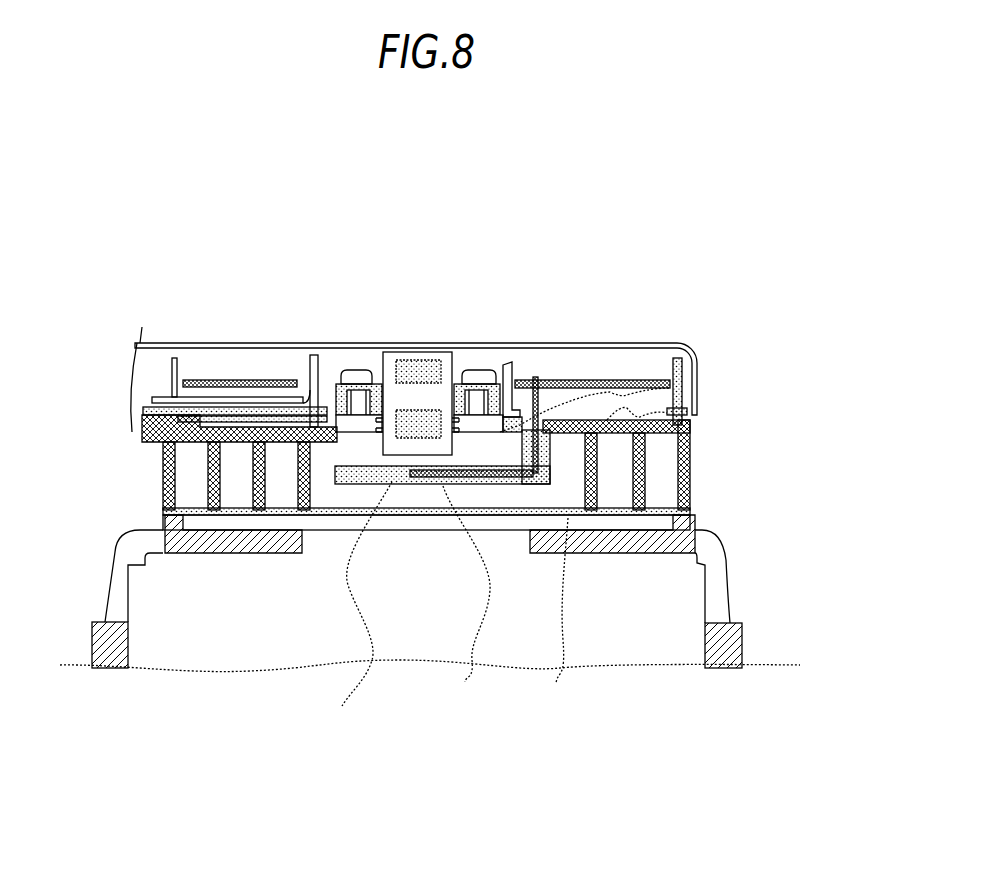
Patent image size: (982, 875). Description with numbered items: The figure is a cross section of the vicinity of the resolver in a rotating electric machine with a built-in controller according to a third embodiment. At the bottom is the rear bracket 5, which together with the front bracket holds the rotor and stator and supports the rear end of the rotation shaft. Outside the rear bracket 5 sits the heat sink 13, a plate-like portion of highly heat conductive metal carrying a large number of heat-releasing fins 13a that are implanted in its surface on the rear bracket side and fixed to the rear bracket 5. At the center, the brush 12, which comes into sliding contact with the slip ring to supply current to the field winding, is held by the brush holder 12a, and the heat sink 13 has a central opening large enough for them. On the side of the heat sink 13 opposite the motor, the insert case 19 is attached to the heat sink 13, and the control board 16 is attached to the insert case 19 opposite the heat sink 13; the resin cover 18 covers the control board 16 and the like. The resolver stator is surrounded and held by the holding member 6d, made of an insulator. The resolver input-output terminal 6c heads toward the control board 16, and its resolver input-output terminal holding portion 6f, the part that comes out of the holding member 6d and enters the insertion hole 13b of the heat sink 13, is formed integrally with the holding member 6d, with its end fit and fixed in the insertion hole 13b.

The rear bracket 5 is at (743, 640).
The resolver input-output terminal 6c is at (466, 598).
The holding member 6d is at (360, 611).
The resolver input-output terminal holding portion 6f is at (559, 614).
The brush 12 is at (407, 358).
The brush holder 12a is at (447, 382).
The heat sink 13 is at (698, 409).
The heat-releasing fins 13a is at (690, 490).
The insertion hole 13b is at (678, 375).
The control board 16 is at (226, 376).
The resin cover 18 is at (653, 343).
The insert case 19 is at (336, 382).